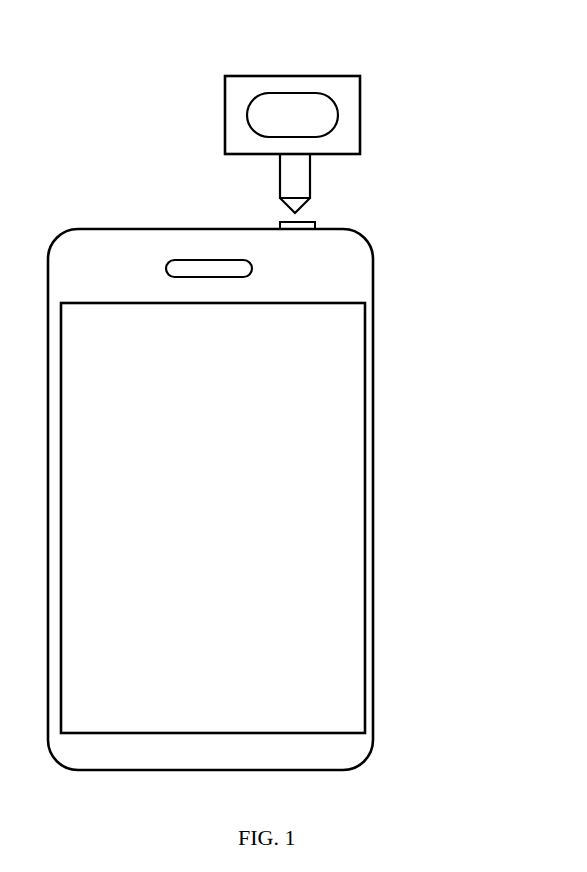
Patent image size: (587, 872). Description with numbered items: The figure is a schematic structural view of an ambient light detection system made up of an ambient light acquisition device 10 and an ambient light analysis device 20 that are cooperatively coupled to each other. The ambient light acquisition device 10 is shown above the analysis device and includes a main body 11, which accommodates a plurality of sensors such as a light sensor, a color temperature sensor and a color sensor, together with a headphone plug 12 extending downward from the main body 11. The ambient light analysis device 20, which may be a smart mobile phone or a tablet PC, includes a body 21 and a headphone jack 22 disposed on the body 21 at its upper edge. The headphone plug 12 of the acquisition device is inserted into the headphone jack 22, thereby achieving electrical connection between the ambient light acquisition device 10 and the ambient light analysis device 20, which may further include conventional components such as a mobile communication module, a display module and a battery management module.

The ambient light acquisition device 10 is at (331, 110).
The main body 11 is at (361, 118).
The headphone plug 12 is at (311, 185).
The ambient light analysis device 20 is at (386, 452).
The body 21 is at (373, 543).
The headphone jack 22 is at (317, 222).